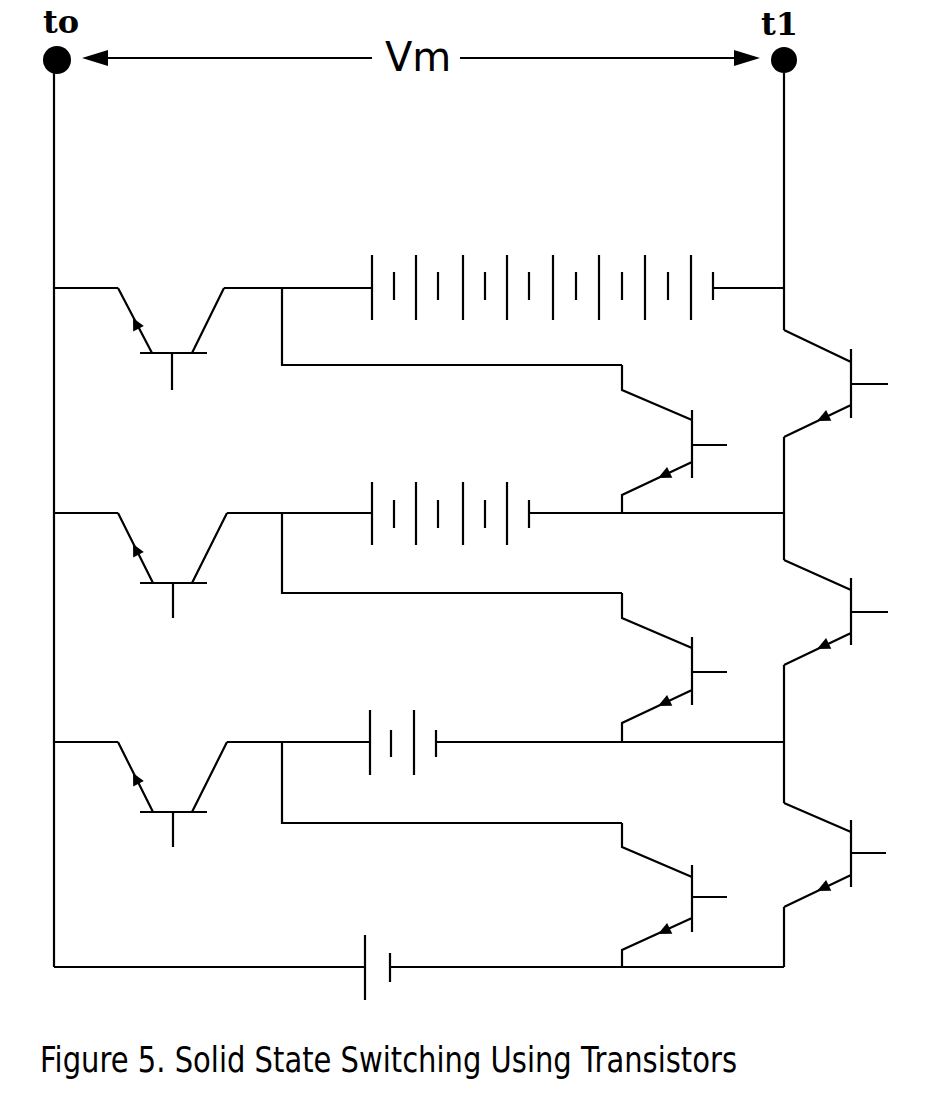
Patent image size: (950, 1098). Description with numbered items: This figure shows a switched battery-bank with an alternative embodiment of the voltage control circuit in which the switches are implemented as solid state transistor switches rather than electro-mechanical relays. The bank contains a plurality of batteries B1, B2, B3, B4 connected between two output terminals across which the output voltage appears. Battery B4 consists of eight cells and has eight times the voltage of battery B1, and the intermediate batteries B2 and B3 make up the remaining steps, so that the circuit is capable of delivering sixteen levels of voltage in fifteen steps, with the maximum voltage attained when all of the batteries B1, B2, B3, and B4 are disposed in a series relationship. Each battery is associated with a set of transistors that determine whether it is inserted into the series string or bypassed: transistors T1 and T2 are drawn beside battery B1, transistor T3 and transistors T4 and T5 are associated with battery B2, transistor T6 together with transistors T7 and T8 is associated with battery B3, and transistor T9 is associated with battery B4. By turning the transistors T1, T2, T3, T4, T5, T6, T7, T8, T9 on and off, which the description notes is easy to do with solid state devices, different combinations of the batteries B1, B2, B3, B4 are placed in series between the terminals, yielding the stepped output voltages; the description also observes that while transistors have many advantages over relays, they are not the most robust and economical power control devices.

The transistor T1 is at (640, 895).
The transistor T2 is at (819, 855).
The transistor T3 is at (172, 774).
The transistor T4 is at (645, 667).
The transistor T5 is at (836, 635).
The transistor T6 is at (172, 547).
The transistor T7 is at (647, 439).
The transistor T8 is at (836, 406).
The transistor T9 is at (171, 319).
The battery B1 is at (385, 942).
The battery B2 is at (399, 720).
The battery B3 is at (447, 485).
The battery B4 is at (539, 264).